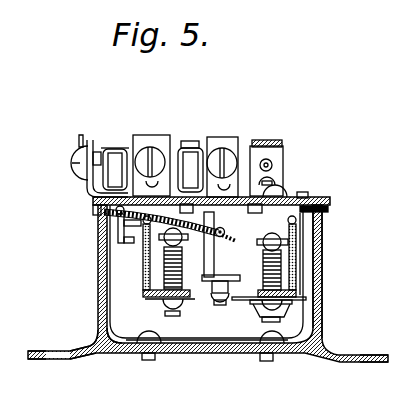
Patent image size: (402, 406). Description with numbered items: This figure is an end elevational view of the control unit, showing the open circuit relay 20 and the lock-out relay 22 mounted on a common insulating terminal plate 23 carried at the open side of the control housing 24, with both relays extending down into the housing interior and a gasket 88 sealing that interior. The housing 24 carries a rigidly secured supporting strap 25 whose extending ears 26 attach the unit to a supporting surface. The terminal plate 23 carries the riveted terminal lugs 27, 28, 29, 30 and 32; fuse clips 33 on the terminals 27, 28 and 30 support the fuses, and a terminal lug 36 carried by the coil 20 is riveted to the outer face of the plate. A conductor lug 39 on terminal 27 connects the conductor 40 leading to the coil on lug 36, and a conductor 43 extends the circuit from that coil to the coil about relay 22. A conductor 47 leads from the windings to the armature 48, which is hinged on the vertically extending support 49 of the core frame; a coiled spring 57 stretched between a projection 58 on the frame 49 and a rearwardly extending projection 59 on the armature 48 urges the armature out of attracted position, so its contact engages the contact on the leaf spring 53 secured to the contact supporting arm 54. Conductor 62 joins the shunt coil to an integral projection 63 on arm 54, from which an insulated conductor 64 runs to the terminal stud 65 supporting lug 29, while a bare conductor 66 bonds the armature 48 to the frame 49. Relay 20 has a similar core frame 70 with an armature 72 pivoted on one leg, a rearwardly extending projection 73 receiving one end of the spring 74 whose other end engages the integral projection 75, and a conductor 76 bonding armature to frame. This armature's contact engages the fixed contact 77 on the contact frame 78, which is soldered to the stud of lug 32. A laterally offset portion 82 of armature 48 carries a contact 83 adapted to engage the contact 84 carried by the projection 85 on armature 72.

The open circuit relay 20 is at (309, 278).
The lock-out relay 22 is at (101, 305).
The insulating terminal plate 23 is at (327, 203).
The control housing 24 is at (112, 246).
The supporting strap 25 is at (125, 353).
The ears 26 is at (38, 360).
The terminal lug 27 is at (89, 140).
The terminal lug 28 is at (167, 140).
The terminal lug 29 is at (232, 137).
The terminal lug 30 is at (192, 141).
The terminal lug 32 is at (278, 147).
The fuse clips 33 is at (207, 147).
The terminal lug 36 is at (285, 190).
The conductor lug 39 is at (95, 202).
The conductor 40 is at (197, 198).
The conductor 43 is at (216, 244).
The conductor 47 is at (96, 198).
The armature 48 is at (106, 332).
The vertically extending support 49 is at (141, 288).
The leaf spring 53 is at (122, 149).
The contact supporting arm 54 is at (160, 343).
The coiled spring 57 is at (140, 294).
The projection 58 is at (160, 255).
The rearwardly extending projection 59 is at (143, 332).
The conductor 62 is at (118, 231).
The integral projection 63 is at (115, 213).
The insulated conductor 64 is at (140, 247).
The terminal stud 65 is at (225, 233).
The bare conductor 66 is at (112, 316).
The core frame 70 is at (304, 194).
The armature 72 is at (297, 297).
The rearwardly extending projection 73 is at (265, 361).
The spring 74 is at (282, 263).
The integral projection 75 is at (284, 242).
The conductor 76 is at (296, 226).
The fixed contact 77 is at (282, 322).
The contact frame 78 is at (290, 308).
The laterally offset portion 82 is at (180, 312).
The contact 83 is at (211, 293).
The contact 84 is at (221, 304).
The projection 85 is at (240, 295).
The gasket 88 is at (328, 213).